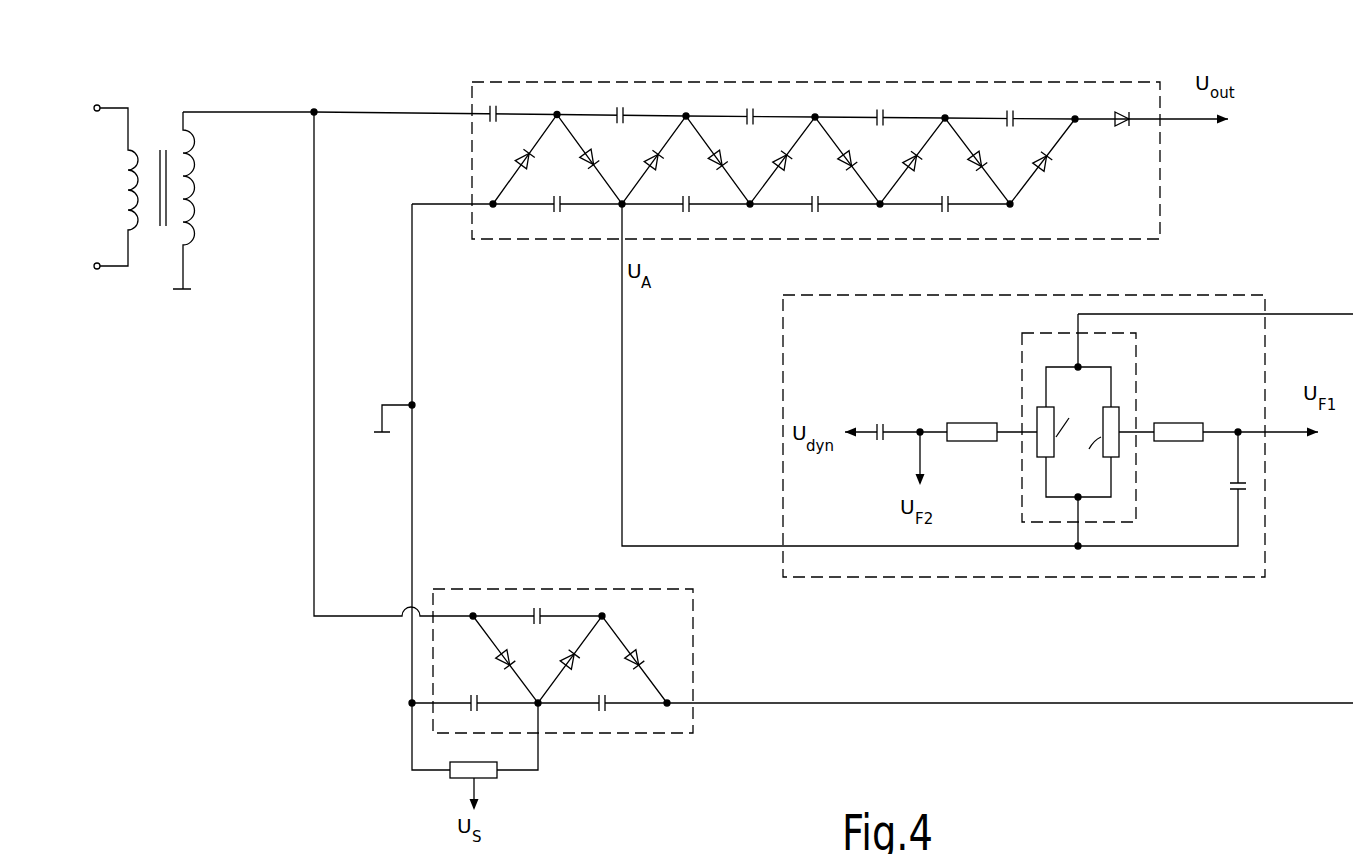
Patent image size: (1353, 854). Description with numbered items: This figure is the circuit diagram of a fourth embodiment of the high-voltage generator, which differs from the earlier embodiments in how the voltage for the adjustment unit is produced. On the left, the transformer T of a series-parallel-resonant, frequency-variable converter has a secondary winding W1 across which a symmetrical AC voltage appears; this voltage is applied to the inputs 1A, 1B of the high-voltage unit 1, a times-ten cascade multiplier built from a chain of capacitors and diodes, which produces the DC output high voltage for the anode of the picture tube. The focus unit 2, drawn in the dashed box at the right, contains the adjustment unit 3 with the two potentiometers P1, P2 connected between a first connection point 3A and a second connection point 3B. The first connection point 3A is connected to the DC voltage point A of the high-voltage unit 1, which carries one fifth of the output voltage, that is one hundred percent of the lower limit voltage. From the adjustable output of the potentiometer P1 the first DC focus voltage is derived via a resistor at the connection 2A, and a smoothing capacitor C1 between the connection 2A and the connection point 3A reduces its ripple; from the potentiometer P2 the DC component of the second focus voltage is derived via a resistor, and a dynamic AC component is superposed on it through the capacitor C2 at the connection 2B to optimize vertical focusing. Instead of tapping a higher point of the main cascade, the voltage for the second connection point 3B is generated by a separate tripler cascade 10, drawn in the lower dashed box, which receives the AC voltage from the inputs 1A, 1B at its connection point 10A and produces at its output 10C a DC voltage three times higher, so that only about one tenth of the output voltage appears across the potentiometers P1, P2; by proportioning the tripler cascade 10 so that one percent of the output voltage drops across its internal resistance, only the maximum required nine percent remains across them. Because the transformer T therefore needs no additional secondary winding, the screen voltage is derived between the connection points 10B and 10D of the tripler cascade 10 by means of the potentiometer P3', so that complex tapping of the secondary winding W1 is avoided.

The transformer T is at (172, 236).
The secondary winding W1 is at (188, 193).
The input 1A is at (315, 109).
The input 1B is at (493, 207).
The DC voltage point A is at (620, 207).
The high-voltage unit 1 is at (771, 185).
The focus unit 2 is at (1051, 467).
The connection 2A is at (1238, 429).
The connection 2B is at (920, 425).
The smoothing capacitor C1 is at (1248, 487).
The capacitor C2 is at (880, 441).
The adjustment unit 3 is at (1108, 428).
The first connection point 3A is at (1082, 498).
The second connection point 3B is at (1082, 366).
The potentiometer P1 is at (1092, 450).
The potentiometer P2 is at (1061, 422).
The tripler cascade 10 is at (848, 675).
The connection point of the tripler cascade 10A is at (472, 612).
The connection point of the tripler cascade 10B is at (409, 704).
The output of the tripler cascade 10C is at (667, 703).
The connection point of the tripler cascade 10D is at (538, 703).
The potentiometer P3' is at (438, 796).